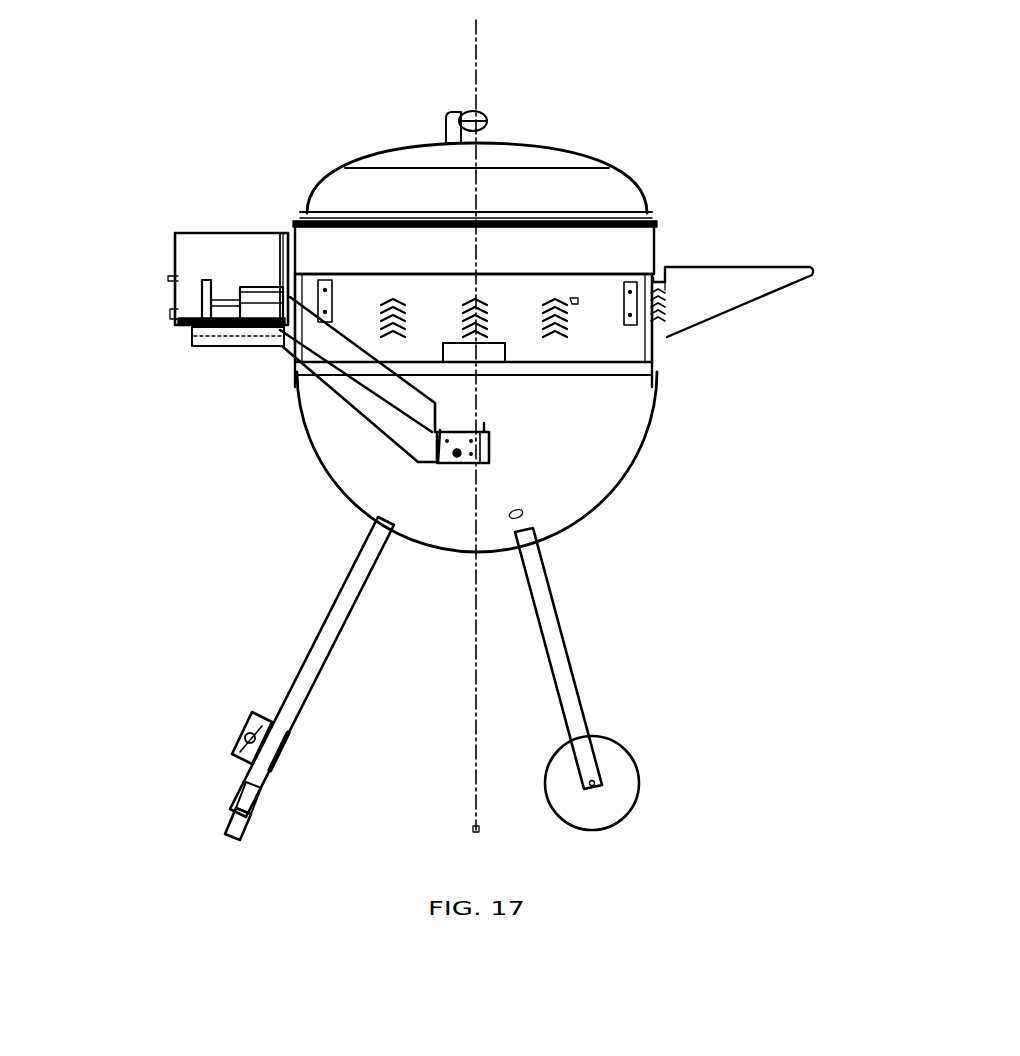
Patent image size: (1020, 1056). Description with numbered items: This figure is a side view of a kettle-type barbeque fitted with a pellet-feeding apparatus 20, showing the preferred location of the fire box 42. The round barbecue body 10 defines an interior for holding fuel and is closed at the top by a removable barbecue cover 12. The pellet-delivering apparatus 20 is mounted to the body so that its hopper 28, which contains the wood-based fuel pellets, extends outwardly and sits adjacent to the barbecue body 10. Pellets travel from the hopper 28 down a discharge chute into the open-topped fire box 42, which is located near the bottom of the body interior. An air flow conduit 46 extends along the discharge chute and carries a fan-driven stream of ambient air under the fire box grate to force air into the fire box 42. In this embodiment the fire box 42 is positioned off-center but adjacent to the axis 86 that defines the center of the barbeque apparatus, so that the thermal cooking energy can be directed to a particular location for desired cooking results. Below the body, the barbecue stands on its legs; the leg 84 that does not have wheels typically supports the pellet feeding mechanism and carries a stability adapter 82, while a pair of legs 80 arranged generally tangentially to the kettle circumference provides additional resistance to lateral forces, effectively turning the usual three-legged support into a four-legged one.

The barbecue body 10 is at (662, 430).
The barbecue cover 12 is at (560, 135).
The apparatus 20 is at (664, 340).
The hopper 28 is at (164, 249).
The fire box 42 is at (450, 456).
The air flow conduit 46 is at (325, 392).
The legs 80 is at (218, 799).
The stability adapter 82 is at (226, 720).
The leg 84 is at (338, 559).
The axis 86 is at (490, 73).